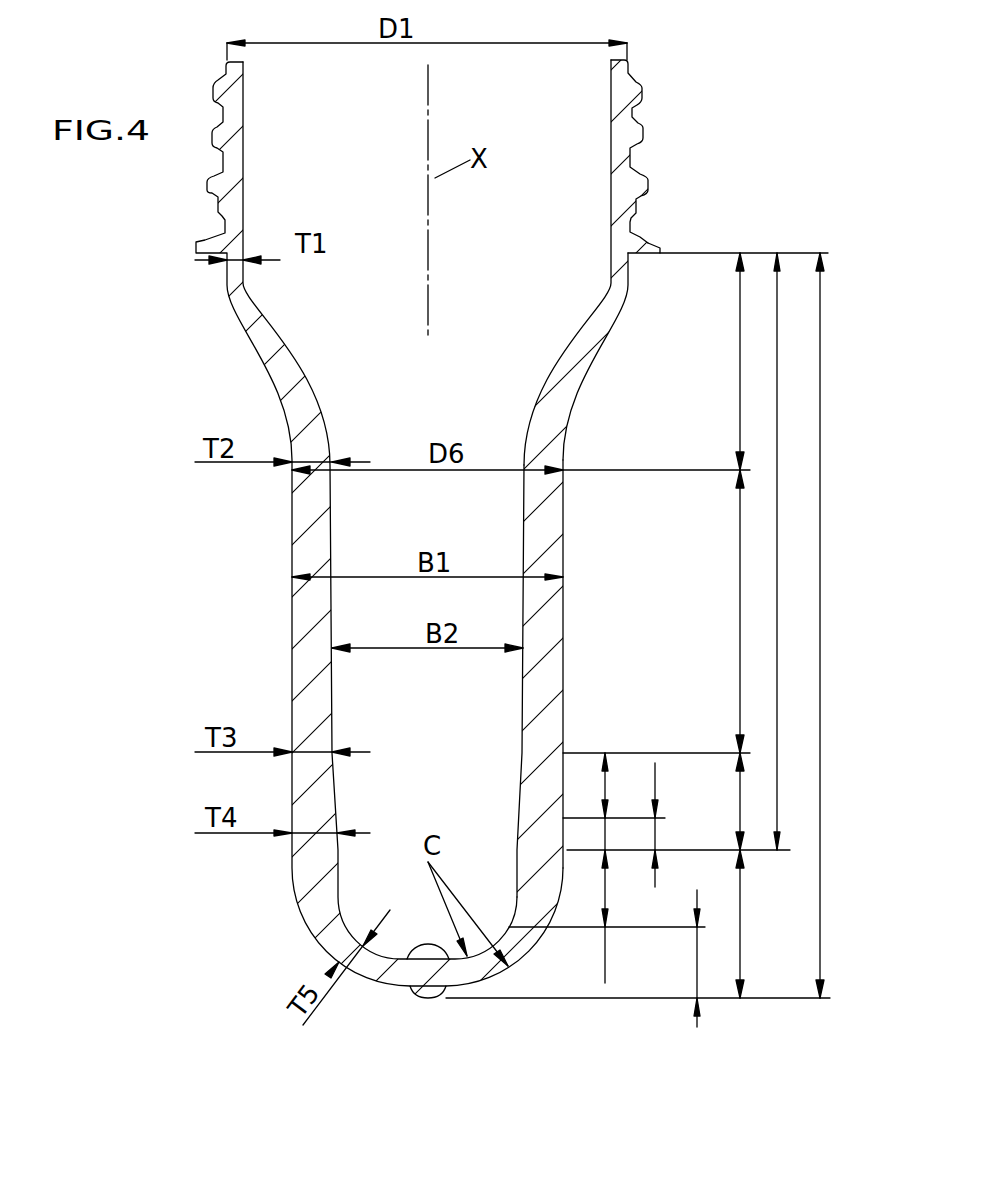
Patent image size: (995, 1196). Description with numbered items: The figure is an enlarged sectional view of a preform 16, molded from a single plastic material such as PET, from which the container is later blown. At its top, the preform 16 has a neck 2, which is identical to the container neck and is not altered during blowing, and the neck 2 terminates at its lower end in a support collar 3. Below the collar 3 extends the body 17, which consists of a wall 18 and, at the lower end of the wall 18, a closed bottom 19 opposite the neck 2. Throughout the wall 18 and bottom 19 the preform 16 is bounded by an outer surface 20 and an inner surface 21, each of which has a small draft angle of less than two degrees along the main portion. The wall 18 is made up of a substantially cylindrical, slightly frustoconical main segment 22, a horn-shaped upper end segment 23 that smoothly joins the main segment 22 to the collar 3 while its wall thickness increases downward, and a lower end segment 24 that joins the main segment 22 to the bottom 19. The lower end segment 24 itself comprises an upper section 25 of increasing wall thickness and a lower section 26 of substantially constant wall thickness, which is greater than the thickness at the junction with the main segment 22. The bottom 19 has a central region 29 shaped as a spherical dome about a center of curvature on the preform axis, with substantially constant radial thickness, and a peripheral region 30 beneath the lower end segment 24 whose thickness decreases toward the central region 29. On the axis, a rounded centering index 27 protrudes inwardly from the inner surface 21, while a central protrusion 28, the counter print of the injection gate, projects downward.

The preform 16 is at (657, 65).
The neck 2 is at (622, 133).
The support collar 3 is at (645, 247).
The outer surface 20 is at (565, 622).
The inner surface 21 is at (522, 698).
The centering index 27 is at (427, 948).
The central protrusion 28 is at (440, 965).
The body 17 is at (808, 625).
The wall 18 is at (764, 551).
The closed bottom 19 is at (728, 924).
The main segment 22 is at (728, 611).
The upper end segment 23 is at (728, 361).
The lower end segment 24 is at (728, 801).
The upper section 25 is at (592, 785).
The lower section 26 is at (642, 825).
The central region 29 is at (684, 958).
The peripheral region 30 is at (592, 900).